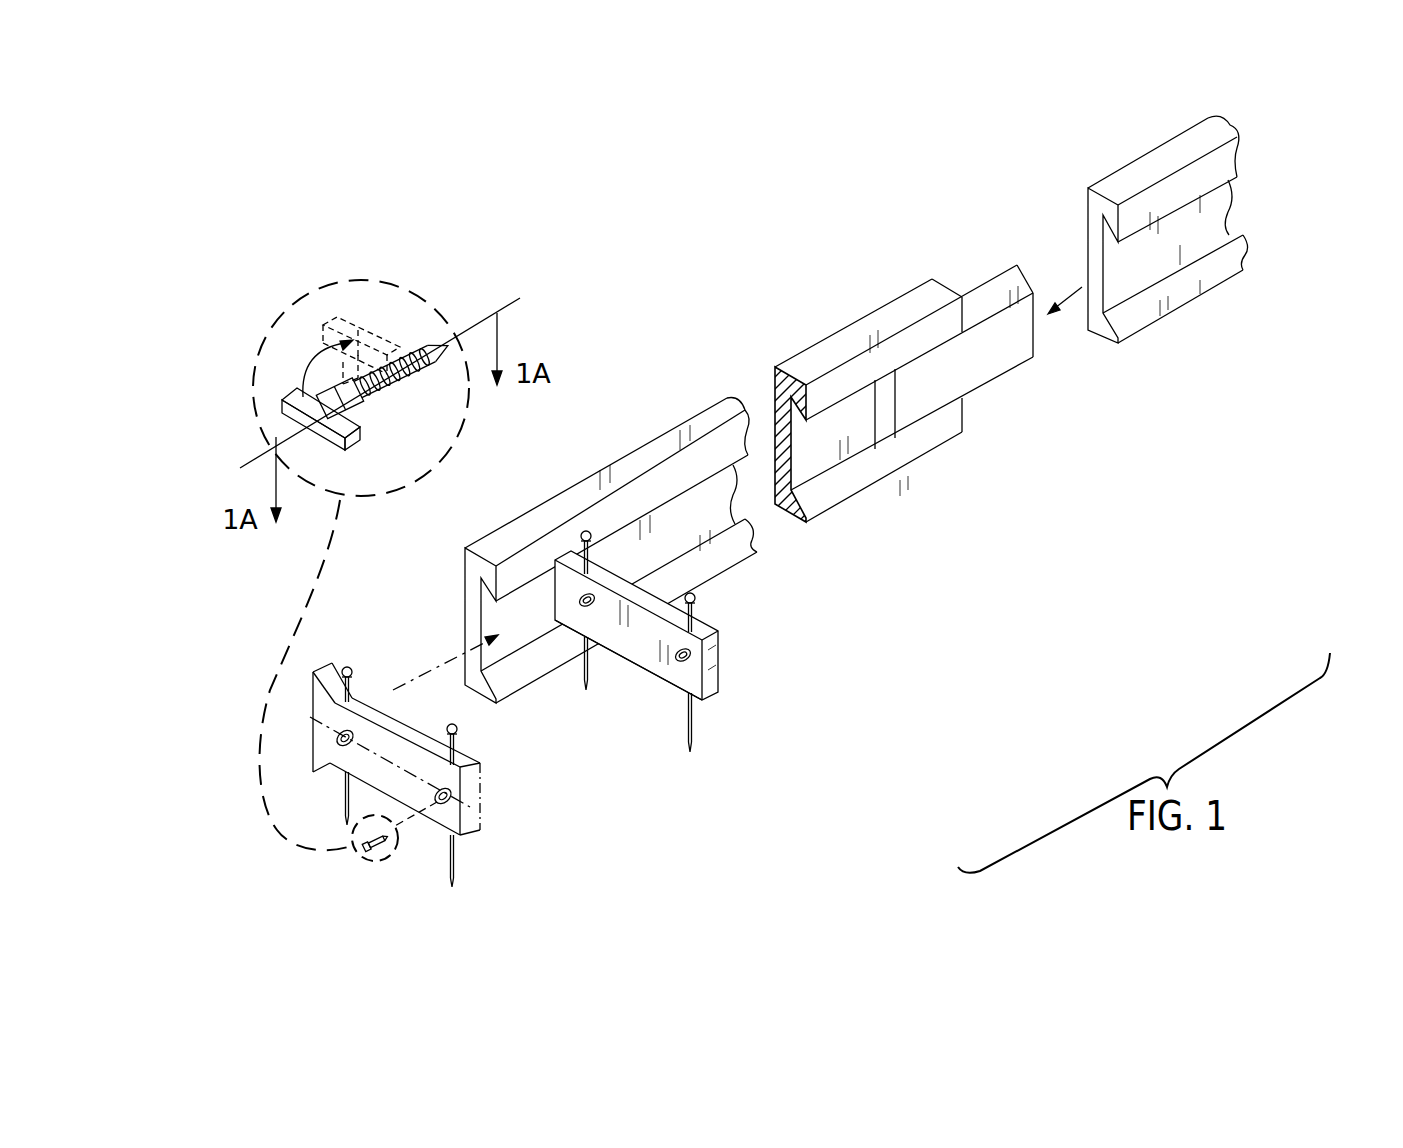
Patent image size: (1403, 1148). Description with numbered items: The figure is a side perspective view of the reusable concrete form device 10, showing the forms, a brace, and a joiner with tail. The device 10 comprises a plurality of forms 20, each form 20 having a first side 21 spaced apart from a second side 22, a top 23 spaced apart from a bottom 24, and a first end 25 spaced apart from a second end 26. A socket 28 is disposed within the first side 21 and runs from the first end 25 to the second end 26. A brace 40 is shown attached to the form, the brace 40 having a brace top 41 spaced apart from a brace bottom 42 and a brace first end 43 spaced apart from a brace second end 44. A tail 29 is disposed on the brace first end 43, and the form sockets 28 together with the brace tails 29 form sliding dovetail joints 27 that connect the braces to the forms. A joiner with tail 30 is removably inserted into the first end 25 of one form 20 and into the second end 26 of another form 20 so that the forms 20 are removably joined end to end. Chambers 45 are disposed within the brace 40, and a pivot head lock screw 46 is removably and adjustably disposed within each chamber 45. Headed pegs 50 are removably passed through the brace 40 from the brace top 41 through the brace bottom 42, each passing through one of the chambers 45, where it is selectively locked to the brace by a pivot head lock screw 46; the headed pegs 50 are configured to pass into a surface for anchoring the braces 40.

The reusable concrete form device 10 is at (723, 320).
The form 20 is at (643, 447).
The first side 21 is at (752, 540).
The second side 22 is at (448, 578).
The top 23 is at (593, 482).
The bottom 24 is at (534, 686).
The first end 25 is at (478, 560).
The second end 26 is at (946, 278).
The sliding dovetail joint 27 is at (986, 398).
The socket 28 is at (722, 497).
The tail 29 is at (555, 598).
The joiner with tail 30 is at (992, 270).
The brace 40 is at (632, 655).
The brace top 41 is at (703, 627).
The brace bottom 42 is at (666, 677).
The brace first end 43 is at (546, 581).
The brace second end 44 is at (708, 673).
The chamber 45 is at (689, 654).
The pivot head lock screw 46 is at (410, 350).
The headed peg 50 is at (700, 720).